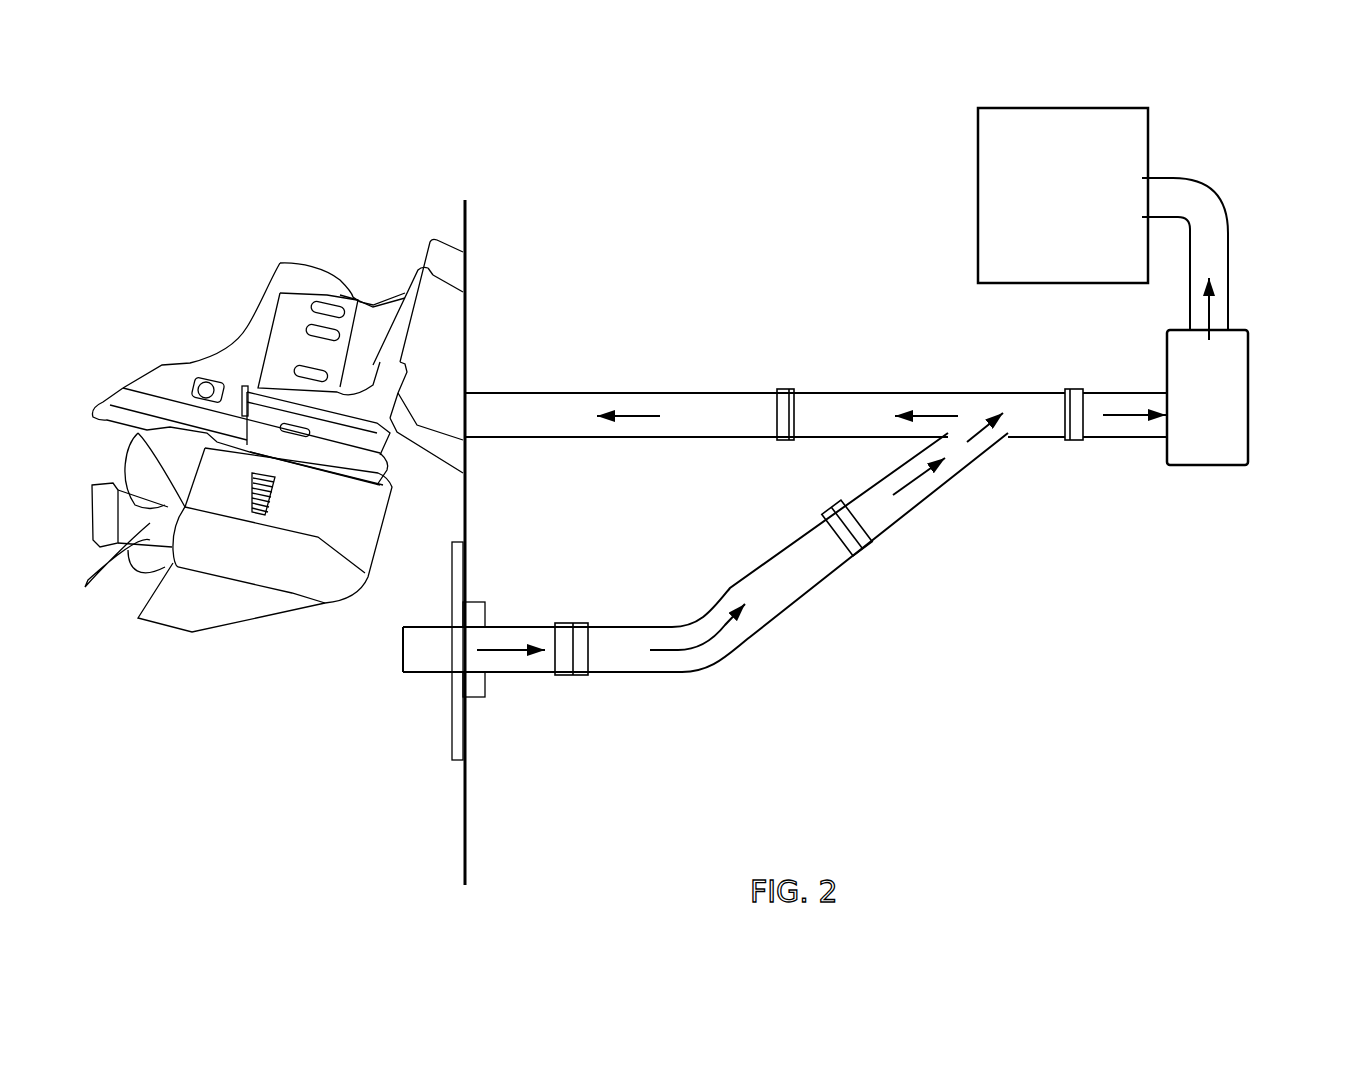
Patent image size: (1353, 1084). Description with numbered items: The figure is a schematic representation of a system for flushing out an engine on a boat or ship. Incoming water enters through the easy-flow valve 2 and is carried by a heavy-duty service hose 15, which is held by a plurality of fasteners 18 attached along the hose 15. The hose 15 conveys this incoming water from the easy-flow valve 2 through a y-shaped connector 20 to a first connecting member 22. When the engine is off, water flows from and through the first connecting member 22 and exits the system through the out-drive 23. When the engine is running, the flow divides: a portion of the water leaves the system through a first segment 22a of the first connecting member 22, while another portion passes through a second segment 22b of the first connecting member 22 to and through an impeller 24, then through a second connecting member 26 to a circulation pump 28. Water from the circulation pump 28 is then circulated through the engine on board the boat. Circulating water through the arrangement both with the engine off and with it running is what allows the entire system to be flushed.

The easy-flow valve 2 is at (383, 660).
The heavy-duty service hose 15 is at (728, 590).
The fasteners 18 is at (572, 672).
The y-shaped connector 20 is at (955, 497).
The first connecting member 22 is at (878, 372).
The first segment 22a is at (592, 393).
The second segment 22b is at (1143, 392).
The out-drive 23 is at (348, 257).
The impeller 24 is at (1207, 397).
The second connecting member 26 is at (1230, 263).
The circulation pump 28 is at (1063, 195).